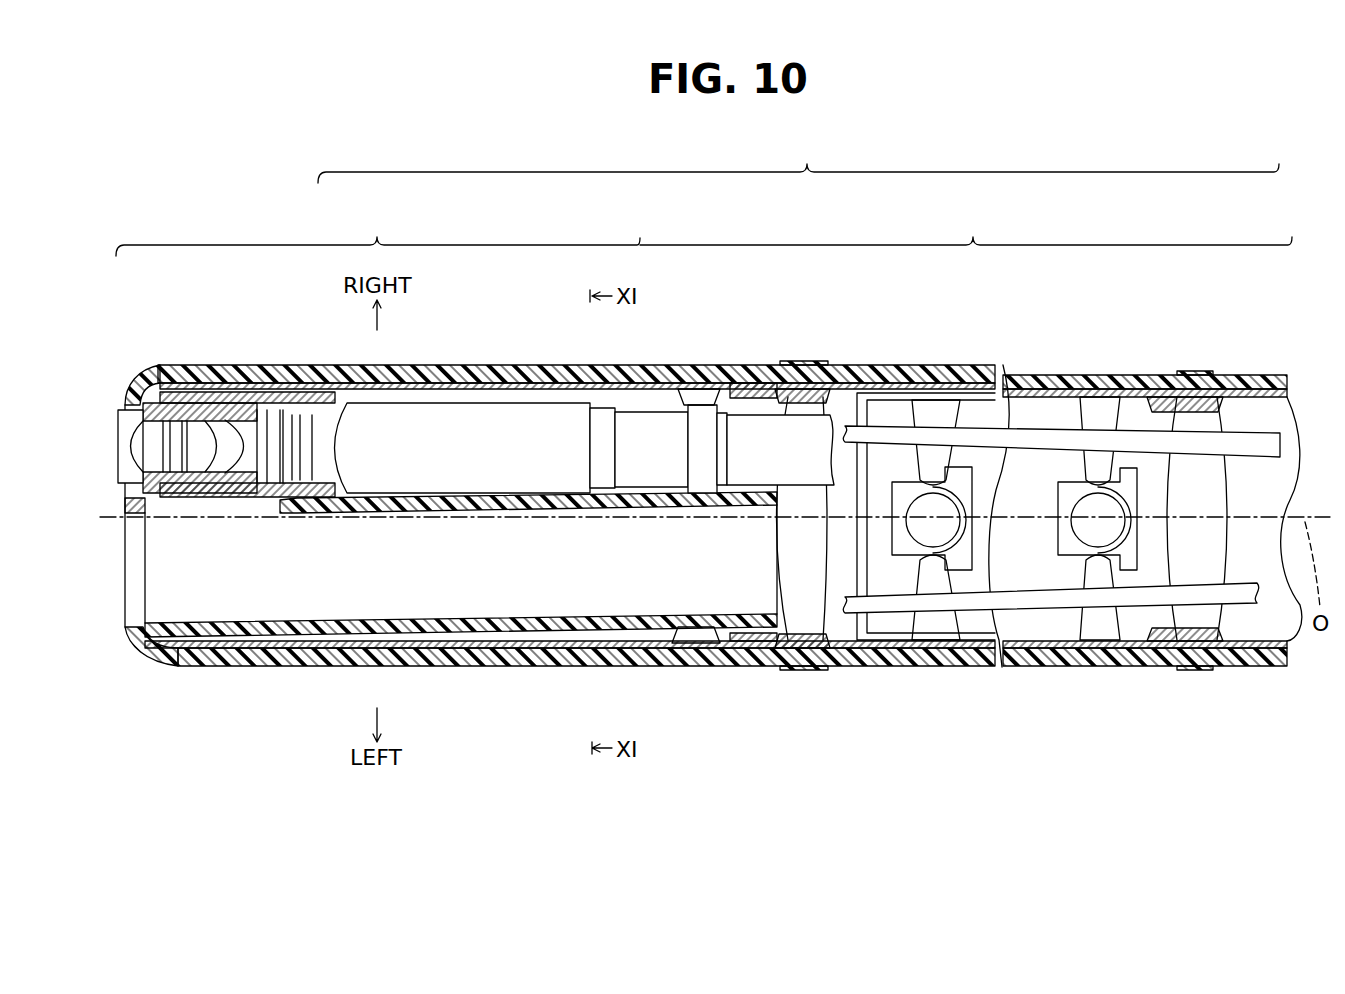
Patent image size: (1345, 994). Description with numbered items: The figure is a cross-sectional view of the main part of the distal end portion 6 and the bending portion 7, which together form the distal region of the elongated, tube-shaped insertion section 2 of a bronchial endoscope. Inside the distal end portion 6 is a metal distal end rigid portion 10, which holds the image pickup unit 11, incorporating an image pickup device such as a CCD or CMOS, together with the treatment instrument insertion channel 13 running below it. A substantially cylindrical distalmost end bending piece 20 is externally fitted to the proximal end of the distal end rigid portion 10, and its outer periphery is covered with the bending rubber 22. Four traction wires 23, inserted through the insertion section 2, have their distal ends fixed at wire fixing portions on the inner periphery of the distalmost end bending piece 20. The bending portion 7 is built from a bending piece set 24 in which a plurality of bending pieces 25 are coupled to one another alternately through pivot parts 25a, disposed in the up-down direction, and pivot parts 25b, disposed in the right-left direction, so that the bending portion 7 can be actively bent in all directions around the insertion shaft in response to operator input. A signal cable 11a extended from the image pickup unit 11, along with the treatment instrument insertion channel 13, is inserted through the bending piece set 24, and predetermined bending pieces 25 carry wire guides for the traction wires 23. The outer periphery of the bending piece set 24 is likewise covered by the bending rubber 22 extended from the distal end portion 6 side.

The insertion section 2 is at (798, 160).
The distal end portion 6 is at (378, 230).
The bending portion 7 is at (966, 227).
The distal end rigid portion 10 is at (182, 395).
The image pickup unit 11 is at (433, 400).
The signal cable 11a is at (762, 440).
The treatment instrument insertion channel 13 is at (505, 655).
The distalmost end bending piece 20 is at (495, 365).
The bending rubber 22 is at (902, 390).
The traction wires 23 is at (1252, 440).
The bending piece set 24 is at (975, 392).
The bending pieces 25 is at (895, 660).
The pivot parts 25a is at (933, 523).
The pivot parts 25b is at (797, 662).